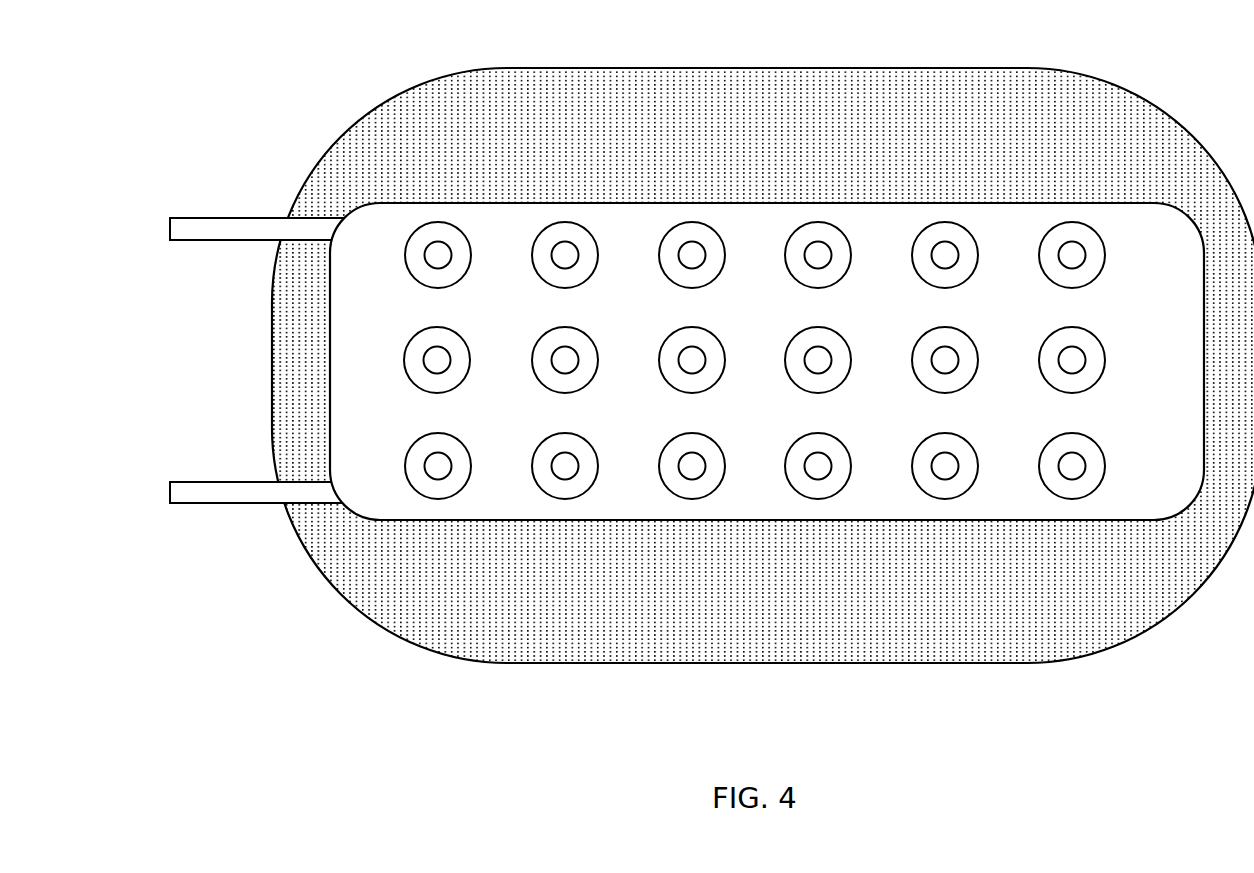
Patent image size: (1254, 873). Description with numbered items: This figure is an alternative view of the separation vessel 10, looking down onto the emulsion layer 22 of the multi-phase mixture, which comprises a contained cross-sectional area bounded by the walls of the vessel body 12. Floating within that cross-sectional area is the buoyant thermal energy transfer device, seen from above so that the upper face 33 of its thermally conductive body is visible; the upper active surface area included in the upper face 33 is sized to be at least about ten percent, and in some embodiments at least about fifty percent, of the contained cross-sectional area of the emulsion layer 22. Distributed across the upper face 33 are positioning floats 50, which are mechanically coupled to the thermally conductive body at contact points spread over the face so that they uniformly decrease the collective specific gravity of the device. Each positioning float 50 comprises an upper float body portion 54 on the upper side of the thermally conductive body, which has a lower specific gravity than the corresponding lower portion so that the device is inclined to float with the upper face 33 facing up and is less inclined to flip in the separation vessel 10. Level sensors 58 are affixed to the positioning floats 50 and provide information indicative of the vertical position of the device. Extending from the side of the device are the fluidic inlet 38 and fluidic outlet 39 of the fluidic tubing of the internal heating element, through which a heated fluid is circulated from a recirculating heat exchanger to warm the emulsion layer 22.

The separation vessel 10 is at (687, 343).
The vessel body 12 is at (762, 365).
The emulsion layer 22 is at (406, 192).
The upper face 33 is at (384, 270).
The fluidic inlet 38 is at (218, 241).
The fluidic outlet 39 is at (218, 504).
The positioning float 50 is at (428, 395).
The upper float body portion 54 is at (424, 392).
The level sensor 58 is at (424, 362).